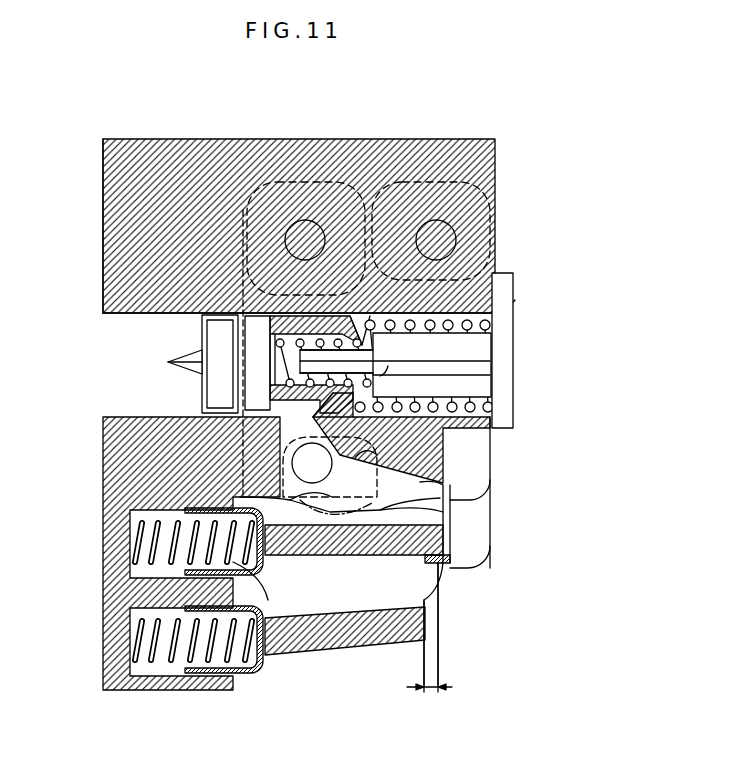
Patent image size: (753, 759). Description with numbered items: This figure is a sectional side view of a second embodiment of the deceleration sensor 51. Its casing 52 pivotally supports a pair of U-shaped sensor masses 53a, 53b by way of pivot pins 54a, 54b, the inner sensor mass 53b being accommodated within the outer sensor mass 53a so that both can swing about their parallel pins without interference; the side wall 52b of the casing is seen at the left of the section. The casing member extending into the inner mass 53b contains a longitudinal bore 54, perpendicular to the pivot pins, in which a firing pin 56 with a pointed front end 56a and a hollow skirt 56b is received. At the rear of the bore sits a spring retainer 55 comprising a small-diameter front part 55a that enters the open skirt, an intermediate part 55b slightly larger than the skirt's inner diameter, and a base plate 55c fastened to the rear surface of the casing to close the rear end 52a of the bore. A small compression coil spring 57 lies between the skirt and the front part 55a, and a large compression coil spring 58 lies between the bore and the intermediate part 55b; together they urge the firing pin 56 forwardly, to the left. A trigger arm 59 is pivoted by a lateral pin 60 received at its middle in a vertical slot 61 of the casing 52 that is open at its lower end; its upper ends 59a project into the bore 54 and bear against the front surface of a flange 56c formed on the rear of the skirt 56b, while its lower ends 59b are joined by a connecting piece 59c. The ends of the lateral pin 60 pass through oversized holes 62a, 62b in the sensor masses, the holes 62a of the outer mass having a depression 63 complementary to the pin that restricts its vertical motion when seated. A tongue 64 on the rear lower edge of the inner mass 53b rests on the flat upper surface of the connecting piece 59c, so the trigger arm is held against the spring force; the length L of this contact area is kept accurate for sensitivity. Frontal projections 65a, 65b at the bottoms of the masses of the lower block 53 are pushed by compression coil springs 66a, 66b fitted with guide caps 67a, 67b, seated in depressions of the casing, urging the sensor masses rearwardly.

The deceleration sensor 51 is at (540, 148).
The casing 52 is at (238, 140).
The rear end of the longitudinal bore 52a is at (501, 303).
The upper block side wall 52b is at (103, 303).
The lower block 53 is at (296, 541).
The outer sensor mass 53a is at (476, 572).
The inner sensor mass 53b is at (478, 499).
The longitudinal bore 54 is at (135, 317).
The pivot pin 54a is at (306, 221).
The pivot pin 54b is at (438, 221).
The spring retainer 55 is at (520, 427).
The front part of the spring retainer 55a is at (306, 359).
The intermediate part of the spring retainer 55b is at (470, 354).
The base plate 55c is at (515, 388).
The firing pin 56 is at (210, 390).
The pointed front end 56a is at (186, 357).
The hollow skirt 56b is at (278, 318).
The flange 56c is at (300, 316).
The small compression coil spring 57 is at (358, 330).
The large compression coil spring 58 is at (492, 323).
The trigger arm 59 is at (390, 507).
The upper ends of the trigger arm 59a is at (300, 408).
The lower ends of the trigger arm 59b is at (440, 515).
The connecting piece 59c is at (443, 573).
The lateral pin 60 is at (318, 482).
The slot 61 is at (329, 520).
The hole 62a is at (350, 478).
The hole 62b is at (378, 458).
The depression 63 is at (300, 462).
The tongue 64 is at (440, 539).
The frontal projection 65a is at (273, 657).
The frontal projection 65b is at (276, 557).
The compression coil spring 66a is at (133, 636).
The compression coil spring 66b is at (133, 542).
The guide cap 67a is at (247, 675).
The guide cap 67b is at (242, 578).
The length of the contact area L is at (429, 638).